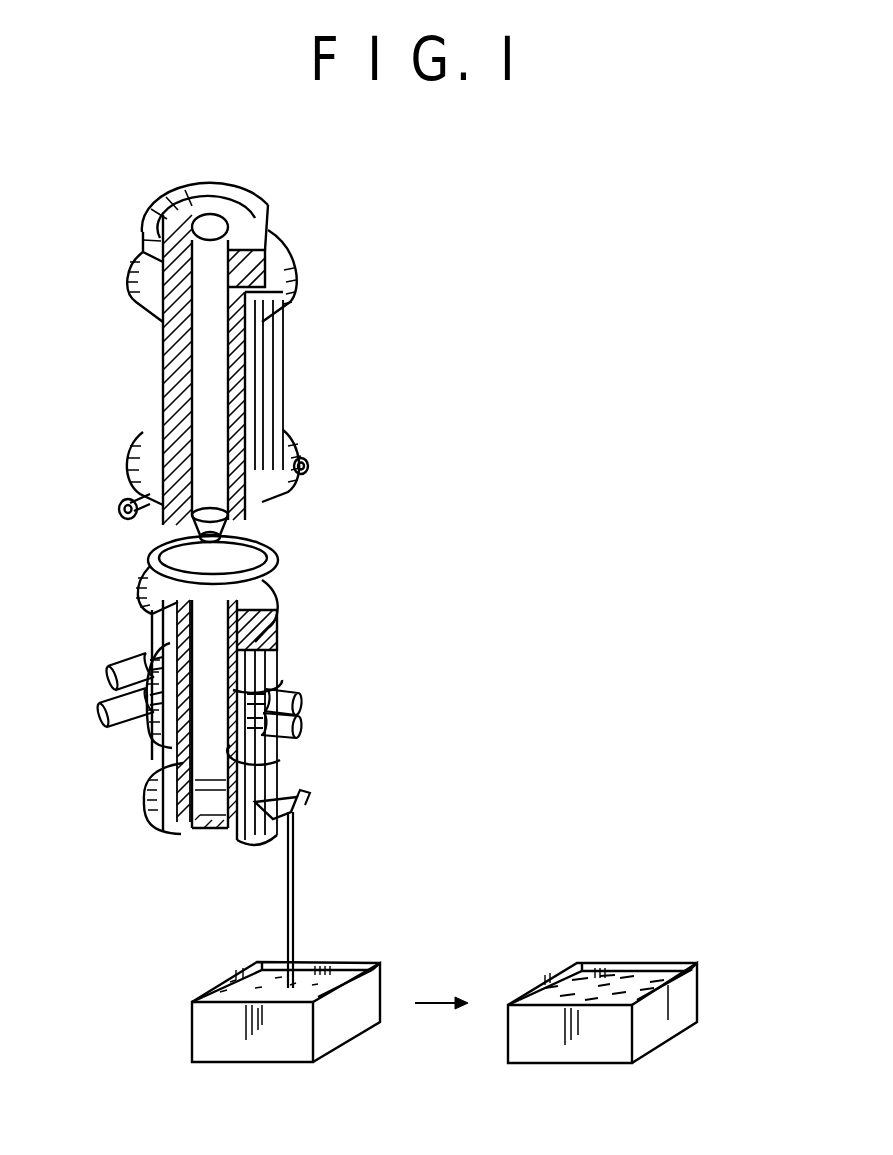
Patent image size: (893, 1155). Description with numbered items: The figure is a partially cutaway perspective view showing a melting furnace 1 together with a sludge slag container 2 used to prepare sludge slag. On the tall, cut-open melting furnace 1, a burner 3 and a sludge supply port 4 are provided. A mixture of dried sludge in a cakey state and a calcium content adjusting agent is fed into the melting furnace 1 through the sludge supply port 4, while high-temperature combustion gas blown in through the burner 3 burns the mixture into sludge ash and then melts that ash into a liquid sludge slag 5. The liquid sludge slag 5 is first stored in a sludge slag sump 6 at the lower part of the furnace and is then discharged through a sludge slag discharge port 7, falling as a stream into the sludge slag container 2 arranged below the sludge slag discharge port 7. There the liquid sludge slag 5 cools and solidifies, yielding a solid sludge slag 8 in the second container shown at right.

The melting furnace 1 is at (437, 358).
The sludge slag container 2 is at (382, 967).
The burner 3 is at (114, 722).
The sludge supply port 4 is at (126, 662).
The liquid sludge slag 5 is at (296, 843).
The sludge slag sump 6 is at (153, 822).
The sludge slag discharge port 7 is at (296, 801).
The solid sludge slag 8 is at (620, 982).